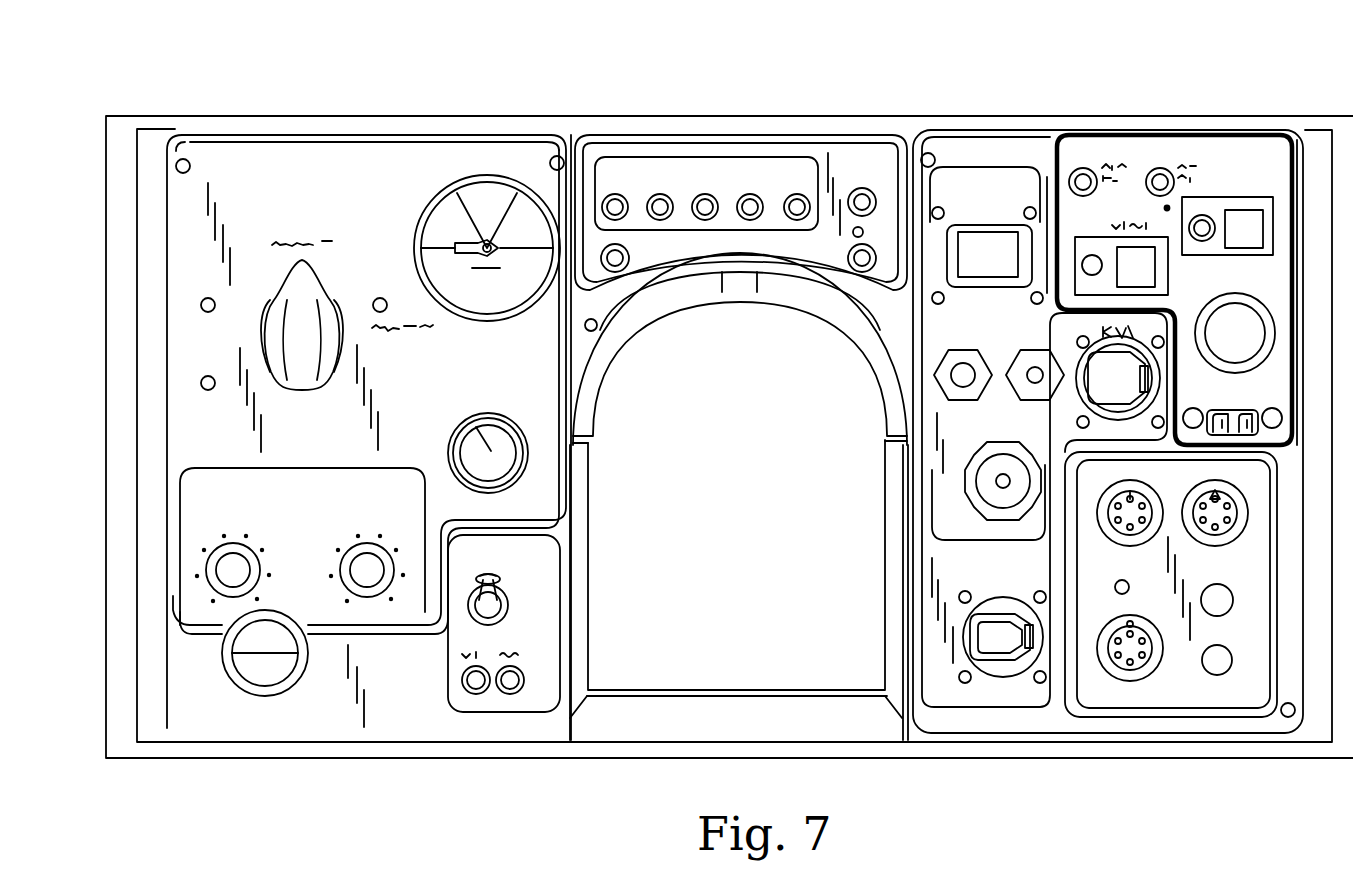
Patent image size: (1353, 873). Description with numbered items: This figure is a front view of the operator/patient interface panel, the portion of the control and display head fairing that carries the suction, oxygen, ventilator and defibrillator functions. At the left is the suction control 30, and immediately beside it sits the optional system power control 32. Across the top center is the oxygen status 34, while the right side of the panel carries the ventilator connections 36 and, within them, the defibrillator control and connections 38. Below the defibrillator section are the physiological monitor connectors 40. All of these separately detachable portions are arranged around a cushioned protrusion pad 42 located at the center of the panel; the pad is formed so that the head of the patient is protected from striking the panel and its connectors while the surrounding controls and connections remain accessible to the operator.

The suction control 30 is at (193, 278).
The system power control 32 is at (445, 658).
The oxygen status 34 is at (848, 158).
The ventilator connections 36 is at (1033, 137).
The defibrillator control and connections 38 is at (1255, 158).
The physiological monitor connectors 40 is at (1185, 693).
The cushioned protrusion pad 42 is at (745, 528).